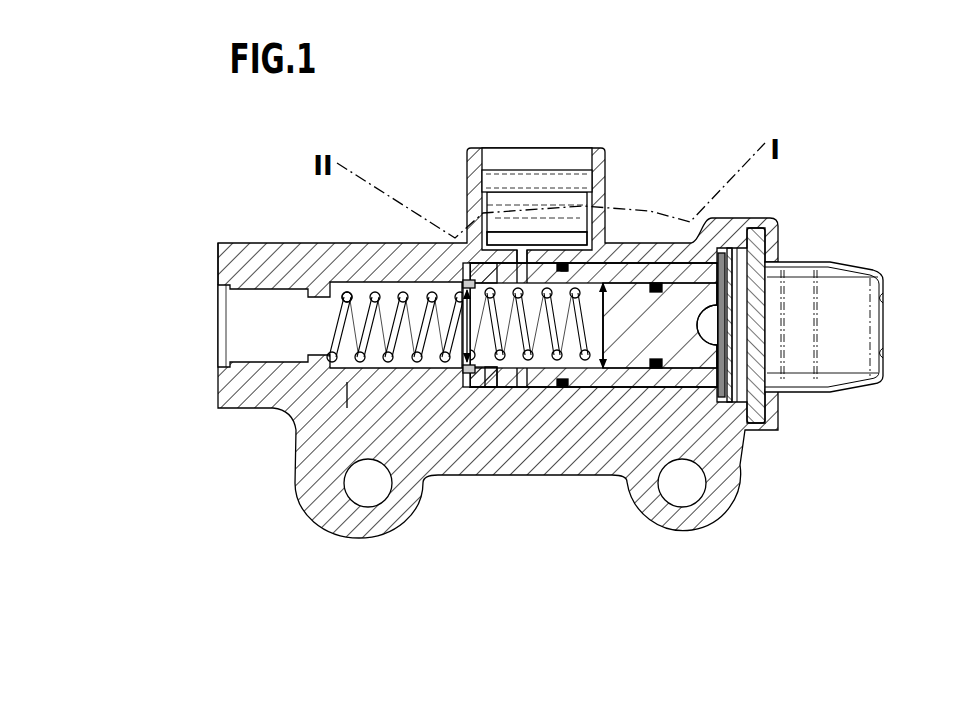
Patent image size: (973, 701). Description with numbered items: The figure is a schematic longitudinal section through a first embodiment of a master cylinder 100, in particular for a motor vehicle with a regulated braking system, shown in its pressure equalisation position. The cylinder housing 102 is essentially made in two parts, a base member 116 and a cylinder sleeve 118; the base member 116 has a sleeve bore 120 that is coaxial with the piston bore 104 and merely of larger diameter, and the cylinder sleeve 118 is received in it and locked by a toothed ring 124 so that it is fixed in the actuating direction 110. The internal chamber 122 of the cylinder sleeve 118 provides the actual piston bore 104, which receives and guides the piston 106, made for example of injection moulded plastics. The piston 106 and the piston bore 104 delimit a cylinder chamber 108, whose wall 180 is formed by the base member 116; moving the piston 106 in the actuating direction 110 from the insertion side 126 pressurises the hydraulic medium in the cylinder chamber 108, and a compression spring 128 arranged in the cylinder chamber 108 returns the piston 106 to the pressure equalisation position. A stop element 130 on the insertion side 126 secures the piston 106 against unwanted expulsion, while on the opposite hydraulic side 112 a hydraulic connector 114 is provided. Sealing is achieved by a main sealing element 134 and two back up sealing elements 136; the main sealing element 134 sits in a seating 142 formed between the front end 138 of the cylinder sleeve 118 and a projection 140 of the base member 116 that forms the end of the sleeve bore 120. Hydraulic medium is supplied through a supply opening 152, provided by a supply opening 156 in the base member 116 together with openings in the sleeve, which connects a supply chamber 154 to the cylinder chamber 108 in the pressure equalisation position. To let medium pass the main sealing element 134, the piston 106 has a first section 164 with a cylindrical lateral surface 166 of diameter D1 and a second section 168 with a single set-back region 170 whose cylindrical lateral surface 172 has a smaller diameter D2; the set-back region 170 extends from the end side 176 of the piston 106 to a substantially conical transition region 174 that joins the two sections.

The master cylinder 100 is at (723, 130).
The cylinder housing 102 is at (312, 260).
The piston bore 104 is at (637, 272).
The piston 106 is at (697, 297).
The cylinder chamber 108 is at (373, 363).
The actuating direction 110 is at (733, 592).
The hydraulic side 112 is at (216, 262).
The hydraulic connector 114 is at (245, 344).
The base member 116 is at (257, 260).
The cylinder sleeve 118 is at (715, 440).
The sleeve bore 120 is at (740, 440).
The internal chamber 122 is at (712, 355).
The toothed ring 124 is at (747, 230).
The insertion side 126 is at (785, 419).
The compression spring 128 is at (342, 299).
The stop element 130 is at (718, 370).
The main sealing element 134 is at (478, 262).
The back up sealing elements 136 is at (600, 262).
The front end 138 is at (485, 370).
The projection 140 is at (470, 388).
The seating 142 is at (500, 212).
The supply opening 152 is at (528, 195).
The supply chamber 154 is at (490, 172).
The supply opening 156 is at (575, 235).
The first section 164 is at (563, 388).
The cylindrical lateral surface 166 is at (548, 388).
The second section 168 is at (465, 385).
The set-back region 170 is at (296, 440).
The cylindrical lateral surface 172 is at (466, 268).
The transition region 174 is at (495, 384).
The end side 176 is at (447, 307).
The wall 180 is at (347, 382).
The diameter D1 is at (607, 283).
The diameter D2 is at (455, 290).